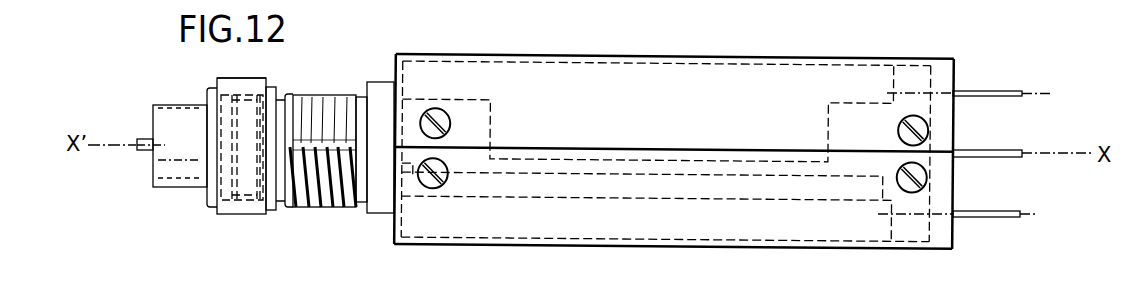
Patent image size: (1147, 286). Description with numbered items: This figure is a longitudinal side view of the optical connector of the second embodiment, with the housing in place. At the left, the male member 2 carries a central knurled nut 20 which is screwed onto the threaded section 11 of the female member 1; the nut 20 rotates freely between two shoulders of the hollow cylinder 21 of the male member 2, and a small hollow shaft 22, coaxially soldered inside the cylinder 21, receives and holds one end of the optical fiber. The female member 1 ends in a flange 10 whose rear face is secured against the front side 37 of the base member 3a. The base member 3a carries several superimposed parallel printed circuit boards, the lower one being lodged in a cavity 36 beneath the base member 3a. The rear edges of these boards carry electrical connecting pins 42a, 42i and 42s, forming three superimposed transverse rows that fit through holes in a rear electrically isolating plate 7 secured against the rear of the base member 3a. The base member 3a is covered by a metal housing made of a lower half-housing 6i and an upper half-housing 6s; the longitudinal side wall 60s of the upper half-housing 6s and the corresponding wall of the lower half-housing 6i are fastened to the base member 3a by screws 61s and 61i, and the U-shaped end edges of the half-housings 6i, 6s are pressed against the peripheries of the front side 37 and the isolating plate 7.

The member 1 is at (327, 210).
The male member 2 is at (245, 217).
The base member 3a is at (628, 183).
The upper half-housing 6s is at (765, 58).
The lower half-housing 6i is at (785, 248).
The isolating plate 7 is at (938, 80).
The flange 10 is at (383, 81).
The threaded section 11 is at (250, 93).
The knurled nut 20 is at (236, 78).
The hollow cylinder 21 is at (177, 181).
The hollow shaft 22 is at (141, 152).
The cavity 36 is at (532, 222).
The front side 37 is at (393, 237).
The electrical connecting pins 42s is at (1023, 92).
The electrical connecting pins 42a is at (1018, 152).
The electrical connecting pins 42i is at (1022, 212).
The longitudinal side wall 60s is at (553, 80).
The screws 61s is at (442, 111).
The screws 61i is at (433, 187).